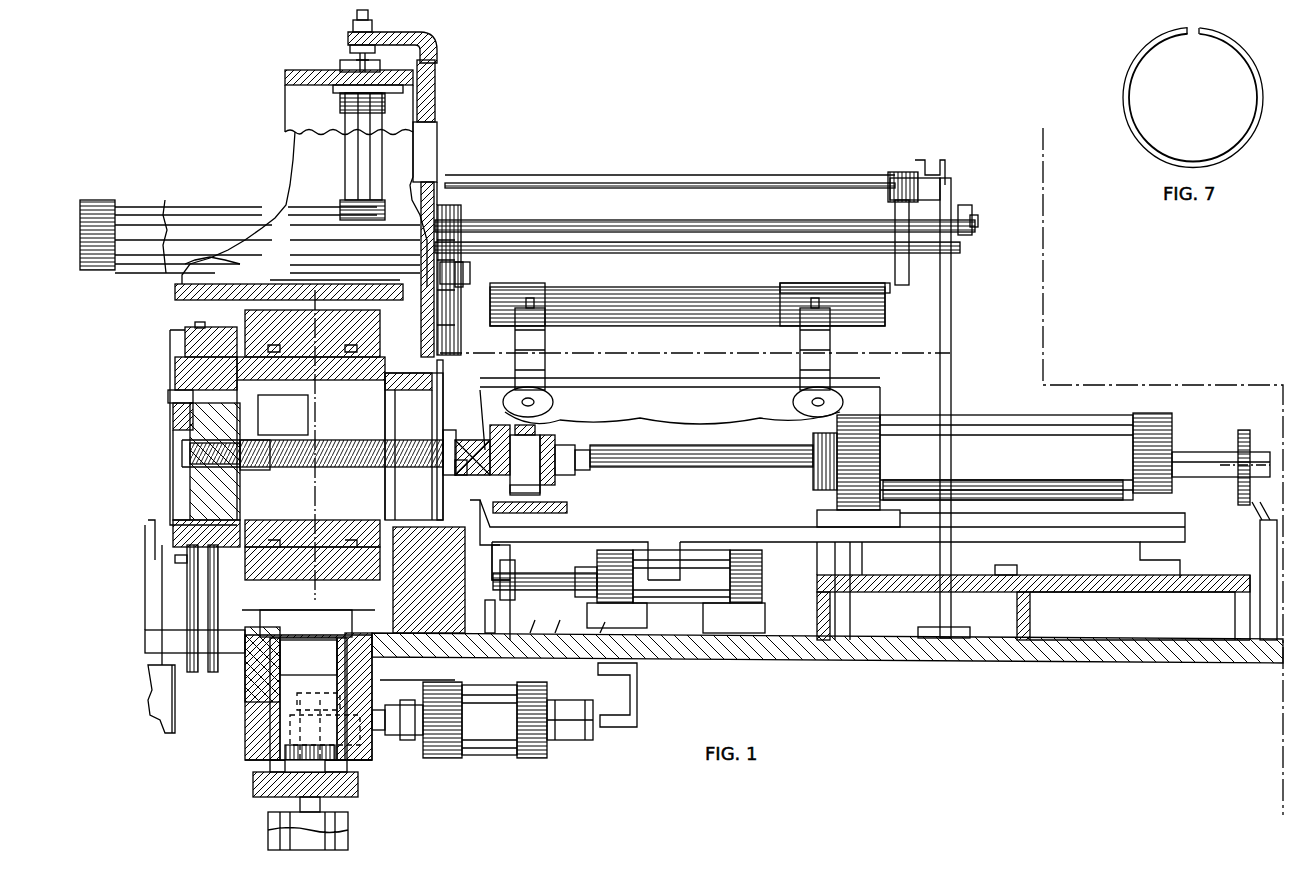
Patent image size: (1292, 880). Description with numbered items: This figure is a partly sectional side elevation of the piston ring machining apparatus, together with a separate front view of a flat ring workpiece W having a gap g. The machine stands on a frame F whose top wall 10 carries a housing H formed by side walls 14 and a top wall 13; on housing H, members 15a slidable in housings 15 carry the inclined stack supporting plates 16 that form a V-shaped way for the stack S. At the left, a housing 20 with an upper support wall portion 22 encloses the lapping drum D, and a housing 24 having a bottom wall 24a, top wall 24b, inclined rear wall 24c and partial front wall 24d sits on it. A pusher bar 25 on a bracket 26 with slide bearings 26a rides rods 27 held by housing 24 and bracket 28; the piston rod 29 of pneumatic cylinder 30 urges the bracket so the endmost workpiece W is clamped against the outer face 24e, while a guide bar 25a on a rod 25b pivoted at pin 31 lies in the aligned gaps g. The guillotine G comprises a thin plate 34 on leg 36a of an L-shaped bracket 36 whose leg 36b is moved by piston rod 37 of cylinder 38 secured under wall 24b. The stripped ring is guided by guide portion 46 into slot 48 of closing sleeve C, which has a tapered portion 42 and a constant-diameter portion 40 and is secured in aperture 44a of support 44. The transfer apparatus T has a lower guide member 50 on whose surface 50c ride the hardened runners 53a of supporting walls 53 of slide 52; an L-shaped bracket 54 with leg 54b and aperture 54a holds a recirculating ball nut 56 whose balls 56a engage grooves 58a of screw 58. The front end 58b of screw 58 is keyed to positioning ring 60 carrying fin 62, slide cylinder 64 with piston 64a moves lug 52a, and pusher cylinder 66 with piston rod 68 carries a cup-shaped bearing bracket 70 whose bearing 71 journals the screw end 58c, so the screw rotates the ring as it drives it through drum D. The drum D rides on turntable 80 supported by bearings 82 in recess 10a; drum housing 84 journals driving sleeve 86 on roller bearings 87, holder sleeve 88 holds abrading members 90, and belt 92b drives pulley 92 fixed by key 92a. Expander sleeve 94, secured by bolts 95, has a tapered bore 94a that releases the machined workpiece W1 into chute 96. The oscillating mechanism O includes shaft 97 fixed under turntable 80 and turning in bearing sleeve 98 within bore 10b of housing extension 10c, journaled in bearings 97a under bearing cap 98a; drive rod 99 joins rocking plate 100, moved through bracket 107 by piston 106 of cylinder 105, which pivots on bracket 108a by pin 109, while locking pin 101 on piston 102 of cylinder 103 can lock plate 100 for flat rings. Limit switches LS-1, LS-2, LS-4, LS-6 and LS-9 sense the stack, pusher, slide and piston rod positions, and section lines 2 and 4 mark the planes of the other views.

In FIG. 1, the section line 2 is at (1043, 128).
In FIG. 1, the top wall 10 is at (910, 652).
In FIG. 1, the recess 10a is at (250, 660).
In FIG. 1, the bore 10b is at (255, 740).
In FIG. 1, the housing extension 10c is at (370, 750).
In FIG. 1, the top wall 13 is at (680, 380).
In FIG. 1, the side walls 14 is at (680, 418).
In FIG. 1, the housings 15 is at (547, 340).
In FIG. 1, the members 15a is at (737, 300).
In FIG. 1, the stack supporting plates 16 is at (687, 304).
In FIG. 1, the housing 20 is at (175, 348).
In FIG. 1, the upper support wall portion 22 is at (175, 292).
In FIG. 1, the housing 24 is at (268, 125).
In FIG. 1, the bottom wall 24a is at (250, 276).
In FIG. 1, the top wall 24b is at (310, 90).
In FIG. 1, the inclined rear wall 24c is at (208, 257).
In FIG. 1, the partial front wall 24d is at (385, 230).
In FIG. 1, the outer face 24e is at (470, 283).
In FIG. 1, the pusher bar 25 is at (880, 280).
In FIG. 1, the guide bar 25a is at (890, 222).
In FIG. 1, the rod 25b is at (972, 210).
In FIG. 1, the bracket 26 is at (910, 240).
In FIG. 1, the slide bearings 26a is at (892, 178).
In FIG. 1, the rods 27 is at (760, 175).
In FIG. 1, the bracket 28 is at (940, 345).
In FIG. 1, the piston rod 29 is at (707, 248).
In FIG. 1, the pneumatic cylinder 30 is at (190, 207).
In FIG. 1, the pivot pin 31 is at (978, 222).
In FIG. 1, the plate 34 is at (440, 140).
In FIG. 1, the L-shaped bracket 36 is at (437, 42).
In FIG. 1, the leg 36a is at (437, 80).
In FIG. 1, the leg 36b is at (372, 25).
In FIG. 1, the piston rod 37 is at (355, 58).
In FIG. 1, the cylinder 38 is at (350, 160).
In FIG. 1, the portion 40 is at (392, 512).
In FIG. 1, the portion 42 is at (505, 568).
In FIG. 1, the support 44 is at (412, 527).
In FIG. 1, the aperture 44a is at (390, 398).
In FIG. 1, the guide portion 46 is at (443, 380).
In FIG. 1, the slot 48 is at (436, 405).
In FIG. 1, the lower guide member 50 is at (1092, 592).
In FIG. 1, the surface 50c is at (1118, 592).
In FIG. 1, the slide 52 is at (1060, 542).
In FIG. 1, the lug 52a is at (492, 590).
In FIG. 1, the supporting walls 53 is at (835, 575).
In FIG. 1, the runner portions 53a is at (1000, 575).
In FIG. 1, the L-shaped bracket 54 is at (575, 505).
In FIG. 1, the aperture 54a is at (446, 440).
In FIG. 1, the leg 54b is at (485, 525).
In FIG. 1, the recirculating ball-type nut 56 is at (470, 478).
In FIG. 1, the recirculating balls 56a is at (455, 470).
In FIG. 1, the screw 58 is at (283, 450).
In FIG. 1, the grooves 58a is at (320, 440).
In FIG. 1, the front end 58b is at (240, 465).
In FIG. 1, the end 58c is at (556, 418).
In FIG. 1, the workpiece positioning ring 60 is at (170, 500).
In FIG. 1, the positioning fin 62 is at (168, 395).
In FIG. 1, the slide cylinder 64 is at (676, 591).
In FIG. 1, the piston 64a is at (545, 573).
In FIG. 1, the pusher cylinder 66 is at (1043, 470).
In FIG. 1, the piston rod 68 is at (778, 470).
In FIG. 1, the bearing bracket 70 is at (545, 445).
In FIG. 1, the bearing 71 is at (548, 488).
In FIG. 1, the turntable 80 is at (308, 623).
In FIG. 1, the bearings 82 is at (416, 669).
In FIG. 1, the drum housing 84 is at (257, 597).
In FIG. 1, the driving sleeve 86 is at (260, 532).
In FIG. 1, the roller bearings 87 is at (268, 348).
In FIG. 1, the holder sleeve 88 is at (290, 530).
In FIG. 1, the abrading members 90 is at (300, 385).
In FIG. 1, the pulley 92 is at (185, 335).
In FIG. 1, the key 92a is at (185, 362).
In FIG. 1, the belt 92b is at (195, 322).
In FIG. 1, the expander sleeve 94 is at (205, 522).
In FIG. 1, the tapered bore 94a is at (173, 410).
In FIG. 1, the bolts 95 is at (175, 558).
In FIG. 1, the chute 96 is at (172, 695).
In FIG. 1, the shaft 97 is at (308, 697).
In FIG. 1, the bearings 97a is at (270, 760).
In FIG. 1, the bearing sleeve 98 is at (270, 700).
In FIG. 1, the bearing cap 98a is at (352, 795).
In FIG. 1, the drive rod 99 is at (318, 691).
In FIG. 1, the rocking plate 100 is at (290, 730).
In FIG. 1, the locking pin 101 is at (308, 659).
In FIG. 1, the piston 102 is at (290, 800).
In FIG. 1, the cylinder 103 is at (268, 838).
In FIG. 1, the cylinder 105 is at (490, 758).
In FIG. 1, the piston 106 is at (400, 705).
In FIG. 1, the bracket 107 is at (378, 735).
In FIG. 1, the bracket 108a is at (615, 727).
In FIG. 1, the pin 109 is at (572, 740).
In FIG. 1, the section line 4 is at (190, 712).
In FIG. 1, the closing sleeve C is at (450, 560).
In FIG. 1, the lapping cylinder D is at (270, 392).
In FIG. 1, the frame F is at (985, 675).
In FIG. 1, the guillotine stripping mechanism G is at (490, 135).
In FIG. 1, the housing H is at (865, 400).
In FIG. 1, the oscillating mechanism O is at (420, 778).
In FIG. 1, the stack S is at (460, 215).
In FIG. 1, the transfer apparatus T is at (800, 627).
In FIG. 1, the workpiece W is at (440, 347).
In FIG. 7, the workpiece W is at (1124, 82).
In FIG. 1, the machined workpiece W1 is at (150, 540).
In FIG. 7, the gap g is at (1192, 32).
In FIG. 1, the limit switch LS-1 is at (470, 265).
In FIG. 1, the limit switch LS-2 is at (925, 160).
In FIG. 1, the limit switch LS-4 is at (510, 640).
In FIG. 1, the limit switch LS-6 is at (1262, 530).
In FIG. 1, the limit switch LS-9 is at (570, 640).